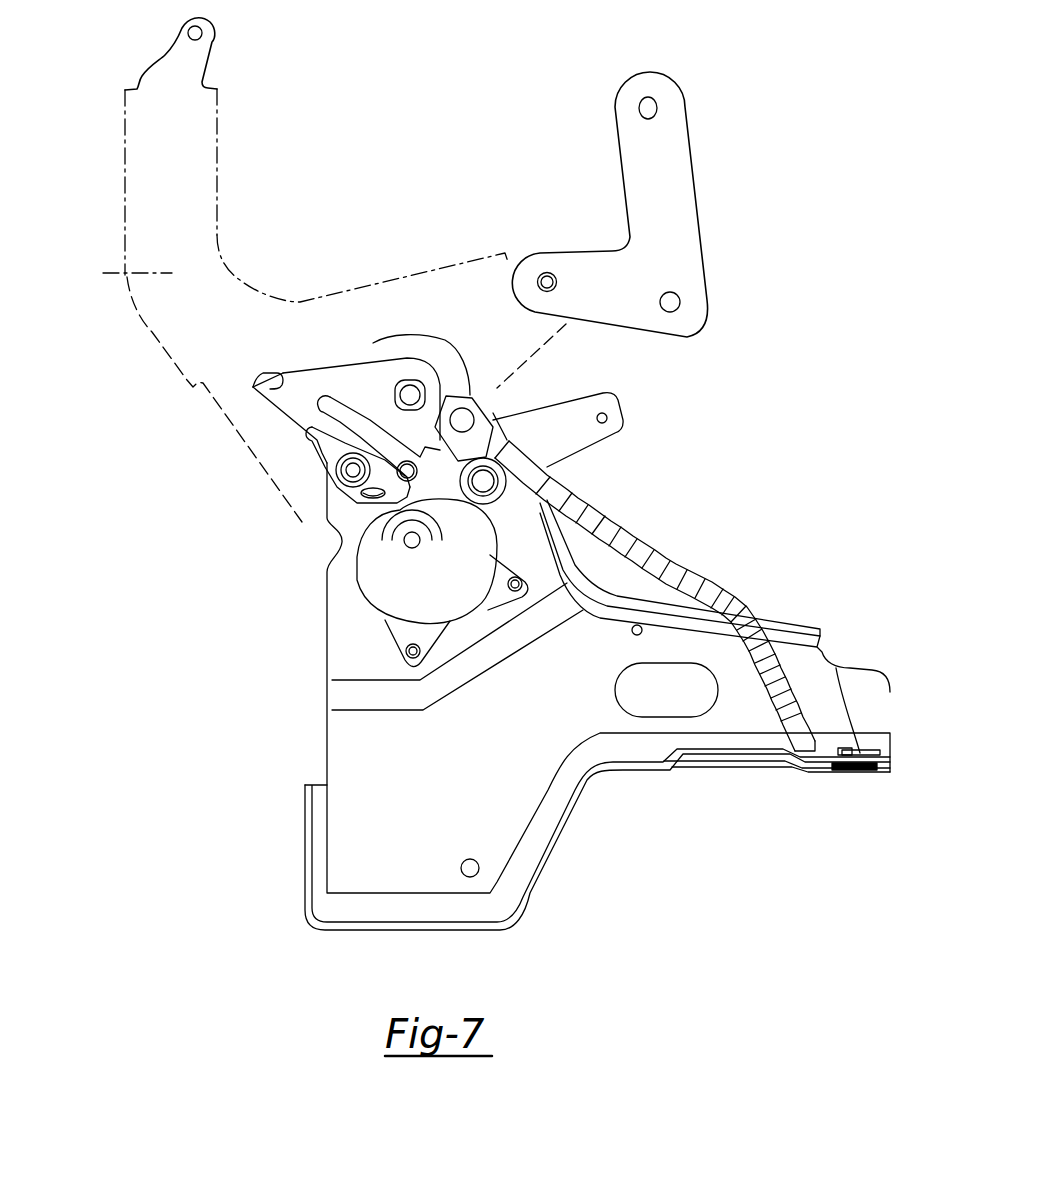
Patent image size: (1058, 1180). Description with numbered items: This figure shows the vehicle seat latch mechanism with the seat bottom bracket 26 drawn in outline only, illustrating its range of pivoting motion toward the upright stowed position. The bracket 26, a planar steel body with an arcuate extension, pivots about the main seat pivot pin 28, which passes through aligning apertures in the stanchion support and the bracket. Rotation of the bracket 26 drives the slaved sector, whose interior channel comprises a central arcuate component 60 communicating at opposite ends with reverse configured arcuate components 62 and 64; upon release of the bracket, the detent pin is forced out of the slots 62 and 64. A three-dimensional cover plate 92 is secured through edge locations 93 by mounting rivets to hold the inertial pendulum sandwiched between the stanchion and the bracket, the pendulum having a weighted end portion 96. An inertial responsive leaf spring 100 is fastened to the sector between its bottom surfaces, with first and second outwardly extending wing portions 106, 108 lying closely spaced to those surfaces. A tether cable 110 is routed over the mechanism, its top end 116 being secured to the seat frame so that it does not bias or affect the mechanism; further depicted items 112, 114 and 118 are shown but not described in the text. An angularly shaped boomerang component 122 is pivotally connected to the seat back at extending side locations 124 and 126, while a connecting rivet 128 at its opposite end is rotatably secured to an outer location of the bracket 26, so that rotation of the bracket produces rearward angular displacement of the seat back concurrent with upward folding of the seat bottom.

The bracket 26 is at (103, 273).
The main seat pivot pin 28 is at (413, 390).
The central arcuate component 60 is at (388, 372).
The reverse configured arcuate component 62 is at (328, 405).
The reverse configured arcuate component 64 is at (418, 471).
The three-dimensional cover plate 92 is at (407, 599).
The edge locations 93 is at (515, 590).
The weighted end portion 96 is at (340, 575).
The inertial responsive leaf spring 100 is at (322, 502).
The first outwardly extending wing portion 106 is at (283, 400).
The second outwardly extending wing portion 108 is at (458, 507).
The tether cable 110 is at (643, 547).
The cable clip 112 is at (836, 665).
The cable end fitting 114 is at (843, 772).
The top end 116 is at (497, 400).
The arm 118 is at (487, 396).
The angularly shaped component 122 is at (646, 240).
The extending side location 124 is at (672, 303).
The extending side location 126 is at (650, 108).
The connecting rivet 128 is at (547, 282).